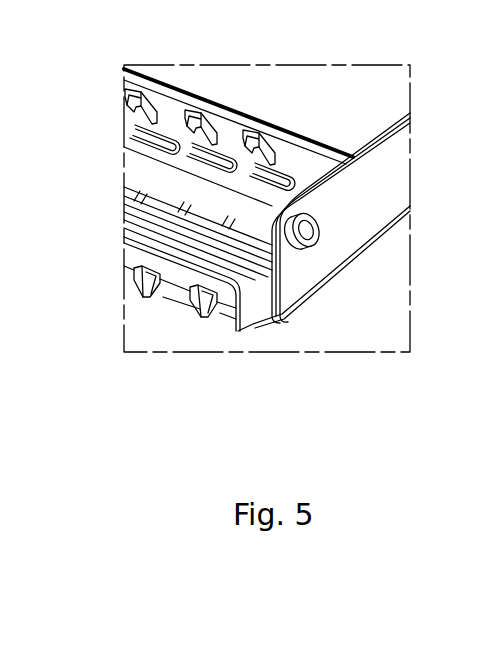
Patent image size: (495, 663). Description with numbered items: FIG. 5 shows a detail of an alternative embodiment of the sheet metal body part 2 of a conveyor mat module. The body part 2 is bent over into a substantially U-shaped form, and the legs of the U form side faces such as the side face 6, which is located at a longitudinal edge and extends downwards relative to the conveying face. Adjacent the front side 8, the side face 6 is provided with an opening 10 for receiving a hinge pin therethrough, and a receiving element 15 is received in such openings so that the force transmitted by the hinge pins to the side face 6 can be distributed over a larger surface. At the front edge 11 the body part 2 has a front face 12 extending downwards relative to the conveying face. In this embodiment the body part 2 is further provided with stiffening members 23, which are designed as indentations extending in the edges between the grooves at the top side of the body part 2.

The body part 2 is at (418, 141).
The side face 6 is at (387, 182).
The front side 8 is at (176, 330).
The opening 10 is at (298, 207).
The front edge 11 is at (145, 297).
The front face 12 is at (132, 255).
The receiving element 15 is at (130, 173).
The stiffening member 23 is at (236, 160).